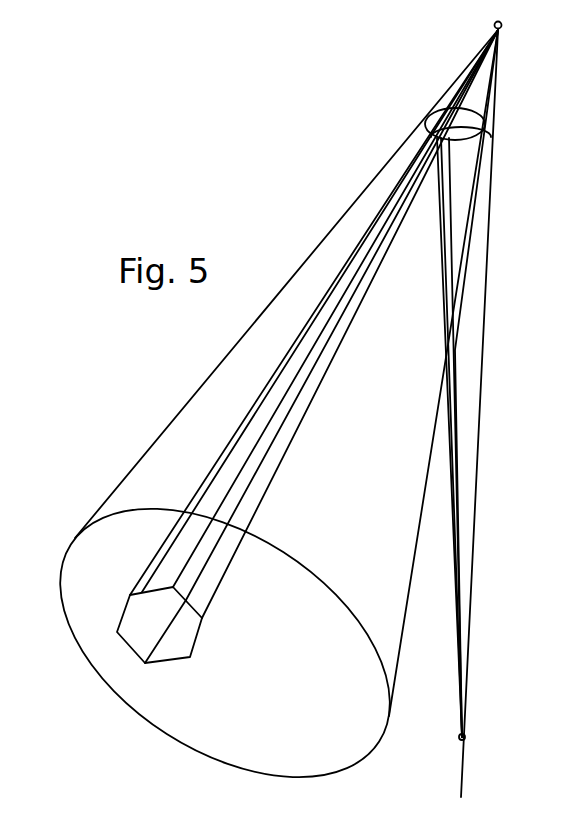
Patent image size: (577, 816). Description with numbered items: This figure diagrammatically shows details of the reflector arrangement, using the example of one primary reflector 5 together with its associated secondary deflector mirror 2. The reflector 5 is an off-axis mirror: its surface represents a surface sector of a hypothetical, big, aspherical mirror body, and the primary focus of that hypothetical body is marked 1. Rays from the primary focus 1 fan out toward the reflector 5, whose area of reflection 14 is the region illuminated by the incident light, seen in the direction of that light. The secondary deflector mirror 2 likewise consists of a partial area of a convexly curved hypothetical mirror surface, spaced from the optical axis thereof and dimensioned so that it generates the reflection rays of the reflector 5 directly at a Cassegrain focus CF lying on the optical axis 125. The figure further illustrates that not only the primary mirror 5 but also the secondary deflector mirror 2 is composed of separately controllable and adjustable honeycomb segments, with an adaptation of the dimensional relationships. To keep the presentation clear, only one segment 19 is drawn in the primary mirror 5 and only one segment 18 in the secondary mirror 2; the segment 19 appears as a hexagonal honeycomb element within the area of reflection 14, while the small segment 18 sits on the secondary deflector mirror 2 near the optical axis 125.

The primary focus 1 is at (494, 30).
The secondary deflector mirror 2 is at (429, 118).
The honeycomb segment 18 is at (482, 134).
The optical axis OA is at (484, 353).
The optical axis 125 is at (473, 555).
The Cassegrain focus CF is at (466, 737).
The area of reflection 14 is at (291, 555).
The honeycomb segment 19 is at (122, 640).
The primary reflector 5 is at (162, 731).